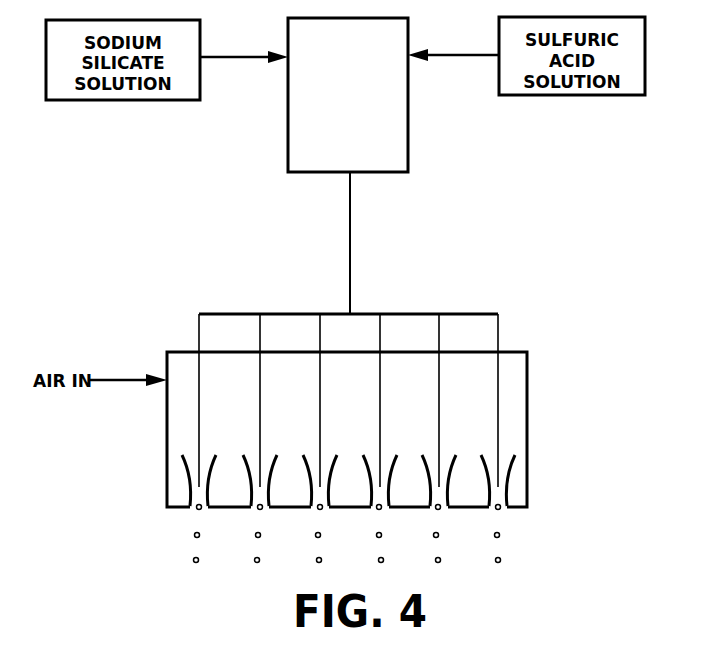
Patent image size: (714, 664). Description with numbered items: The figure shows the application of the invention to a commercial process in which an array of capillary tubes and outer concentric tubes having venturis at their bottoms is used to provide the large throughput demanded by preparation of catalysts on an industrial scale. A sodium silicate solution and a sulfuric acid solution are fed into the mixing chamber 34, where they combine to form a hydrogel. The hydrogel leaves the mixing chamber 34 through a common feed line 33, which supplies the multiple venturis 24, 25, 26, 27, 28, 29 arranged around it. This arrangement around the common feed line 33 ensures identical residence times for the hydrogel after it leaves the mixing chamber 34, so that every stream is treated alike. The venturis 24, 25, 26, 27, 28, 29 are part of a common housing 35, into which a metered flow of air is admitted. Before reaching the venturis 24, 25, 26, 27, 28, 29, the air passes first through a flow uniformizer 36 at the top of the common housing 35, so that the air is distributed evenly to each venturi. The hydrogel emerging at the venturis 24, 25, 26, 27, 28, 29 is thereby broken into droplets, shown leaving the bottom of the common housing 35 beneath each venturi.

The nozzle 24 is at (194, 509).
The nozzle 25 is at (258, 509).
The nozzle 26 is at (311, 509).
The nozzle 27 is at (384, 509).
The nozzle 28 is at (443, 509).
The nozzle 29 is at (502, 509).
The conduit 33 is at (350, 238).
The mixing chamber 34 is at (408, 45).
The chamber housing 35 is at (528, 428).
The manifold 36 is at (188, 352).